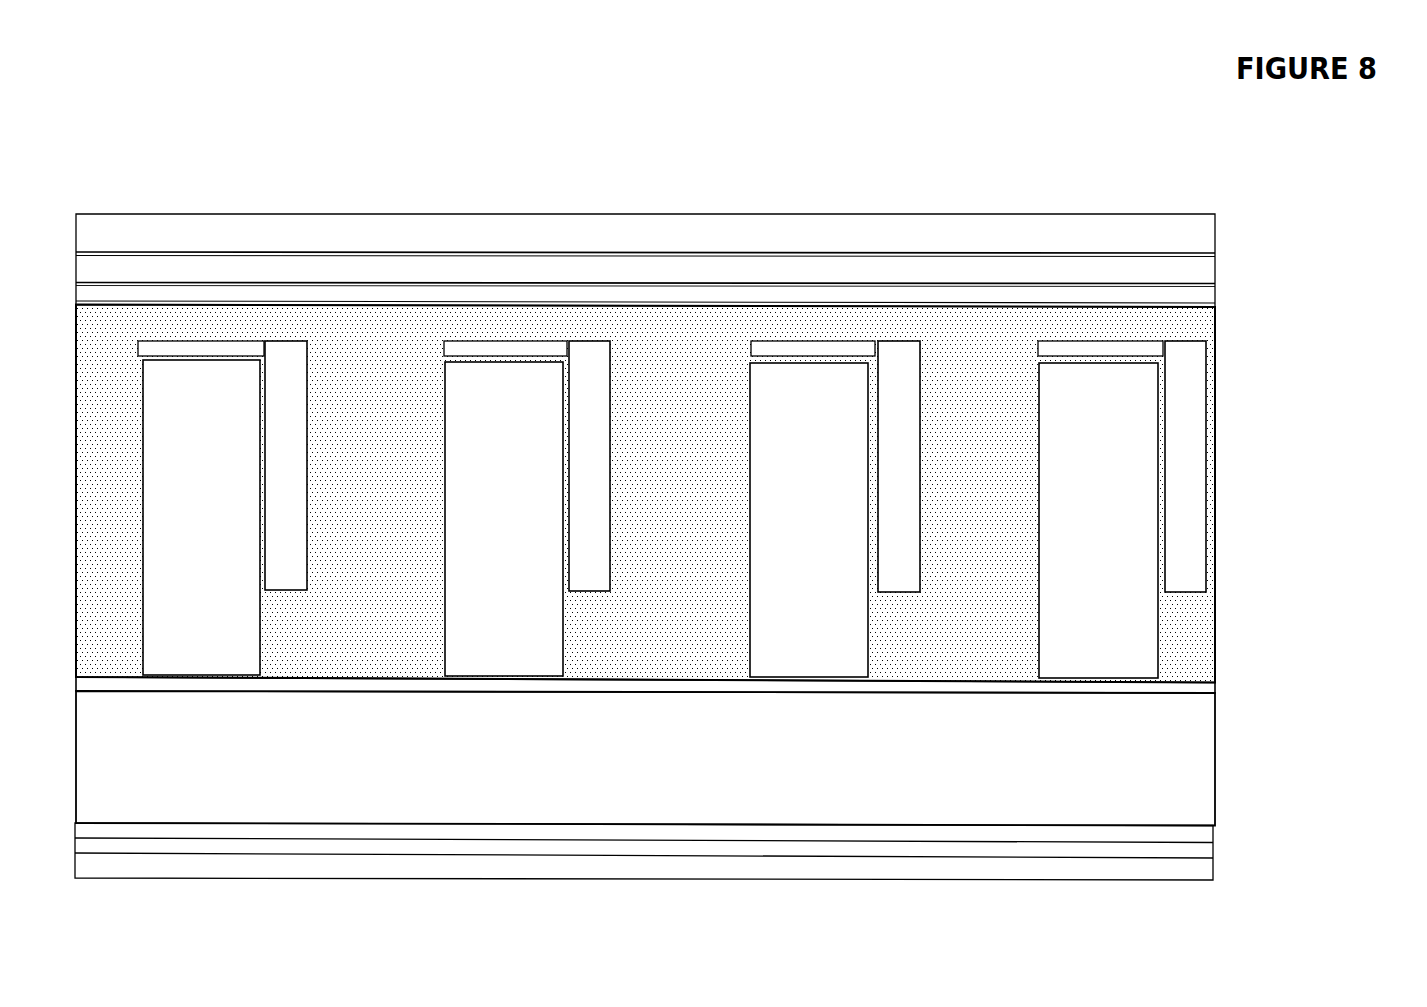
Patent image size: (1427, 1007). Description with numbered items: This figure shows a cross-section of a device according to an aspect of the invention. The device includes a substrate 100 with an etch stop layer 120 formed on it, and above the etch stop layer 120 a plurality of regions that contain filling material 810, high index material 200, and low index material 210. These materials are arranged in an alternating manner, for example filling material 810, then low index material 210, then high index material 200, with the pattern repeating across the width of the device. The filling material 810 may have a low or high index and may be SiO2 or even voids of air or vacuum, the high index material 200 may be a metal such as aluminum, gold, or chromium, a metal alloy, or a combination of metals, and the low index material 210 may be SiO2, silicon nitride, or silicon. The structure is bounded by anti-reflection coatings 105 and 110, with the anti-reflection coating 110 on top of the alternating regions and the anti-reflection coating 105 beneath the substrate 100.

The anti-reflection coating 110 is at (1244, 252).
The filling material 810 is at (985, 552).
The low index material 210 is at (1130, 446).
The high index material 200 is at (1201, 501).
The etch stop layer 120 is at (1238, 692).
The substrate 100 is at (1226, 773).
The anti-reflection coating 105 is at (1239, 854).